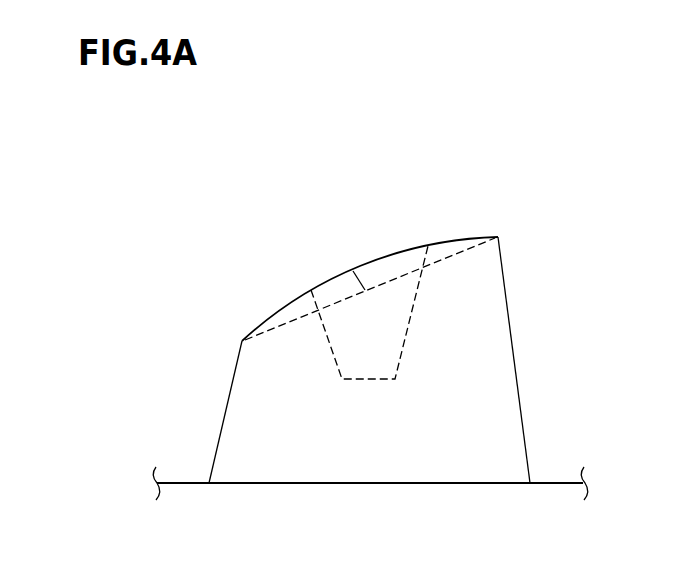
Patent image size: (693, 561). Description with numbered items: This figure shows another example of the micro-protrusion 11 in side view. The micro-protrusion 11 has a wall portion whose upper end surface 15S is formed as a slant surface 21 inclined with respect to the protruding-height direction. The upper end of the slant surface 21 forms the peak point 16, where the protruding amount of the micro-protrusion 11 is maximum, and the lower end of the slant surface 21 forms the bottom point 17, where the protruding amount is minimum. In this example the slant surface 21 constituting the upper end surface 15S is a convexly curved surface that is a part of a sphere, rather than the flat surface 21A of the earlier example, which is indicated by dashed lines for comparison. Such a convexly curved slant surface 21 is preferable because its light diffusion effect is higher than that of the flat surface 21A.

The micro-protrusion 11 is at (555, 302).
The upper end surface of the wall portion 15S is at (382, 262).
The peak point 16 is at (498, 237).
The bottom point 17 is at (242, 341).
The slant surface 21 is at (450, 241).
The flat surface 21A is at (353, 271).